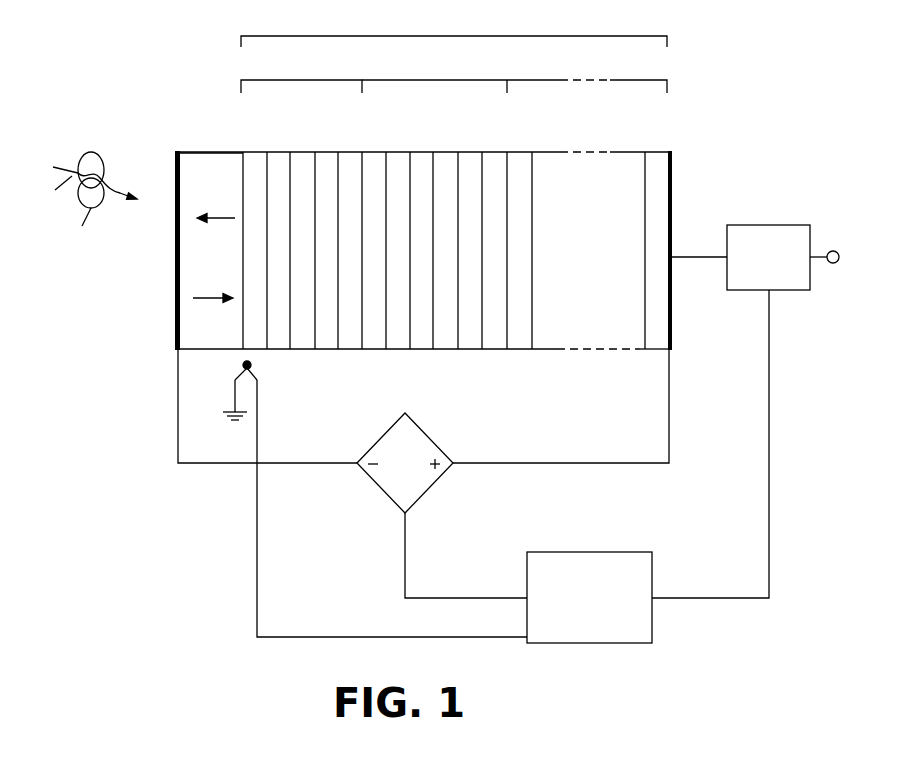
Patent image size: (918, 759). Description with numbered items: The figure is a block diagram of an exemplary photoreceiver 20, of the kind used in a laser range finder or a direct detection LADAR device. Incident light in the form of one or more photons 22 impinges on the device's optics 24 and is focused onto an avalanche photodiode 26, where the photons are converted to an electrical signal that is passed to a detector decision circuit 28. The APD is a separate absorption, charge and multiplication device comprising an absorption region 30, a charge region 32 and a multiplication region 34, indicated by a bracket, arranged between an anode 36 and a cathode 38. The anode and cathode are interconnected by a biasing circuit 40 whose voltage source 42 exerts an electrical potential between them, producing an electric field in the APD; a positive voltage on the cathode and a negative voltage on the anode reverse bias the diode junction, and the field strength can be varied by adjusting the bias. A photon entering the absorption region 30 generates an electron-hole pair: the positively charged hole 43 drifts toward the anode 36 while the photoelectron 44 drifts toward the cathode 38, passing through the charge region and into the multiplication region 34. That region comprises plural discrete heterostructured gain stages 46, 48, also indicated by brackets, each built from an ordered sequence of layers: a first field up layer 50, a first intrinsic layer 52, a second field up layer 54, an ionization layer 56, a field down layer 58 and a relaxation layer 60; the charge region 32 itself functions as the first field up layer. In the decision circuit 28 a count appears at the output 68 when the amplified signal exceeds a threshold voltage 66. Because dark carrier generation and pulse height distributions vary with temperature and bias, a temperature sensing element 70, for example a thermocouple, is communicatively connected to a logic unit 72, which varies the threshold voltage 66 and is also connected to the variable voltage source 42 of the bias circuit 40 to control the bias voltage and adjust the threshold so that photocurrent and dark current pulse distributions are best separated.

The photoreceiver 20 is at (772, 68).
The photons 22 is at (85, 194).
The optics 24 is at (81, 205).
The avalanche photodiode 26 is at (146, 344).
The detector decision circuit 28 is at (780, 224).
The absorption region 30 is at (192, 150).
The charge region 32 is at (252, 150).
The multiplication region 34 is at (607, 34).
The anode 36 is at (176, 236).
The cathode 38 is at (673, 301).
The biasing circuit 40 is at (221, 555).
The voltage source 42 is at (427, 437).
The hole 43 is at (222, 220).
The photoelectron 44 is at (214, 300).
The gain stage 46 is at (268, 78).
The gain stage 48 is at (427, 78).
The first field up layer 50 is at (377, 150).
The first intrinsic layer 52 is at (403, 150).
The second field up layer 54 is at (275, 150).
The ionization layer 56 is at (302, 150).
The field down layer 58 is at (323, 150).
The relaxation layer 60 is at (353, 150).
The threshold voltage 66 is at (773, 360).
The output 68 is at (840, 252).
The temperature sensing element 70 is at (258, 368).
The logic unit 72 is at (596, 551).